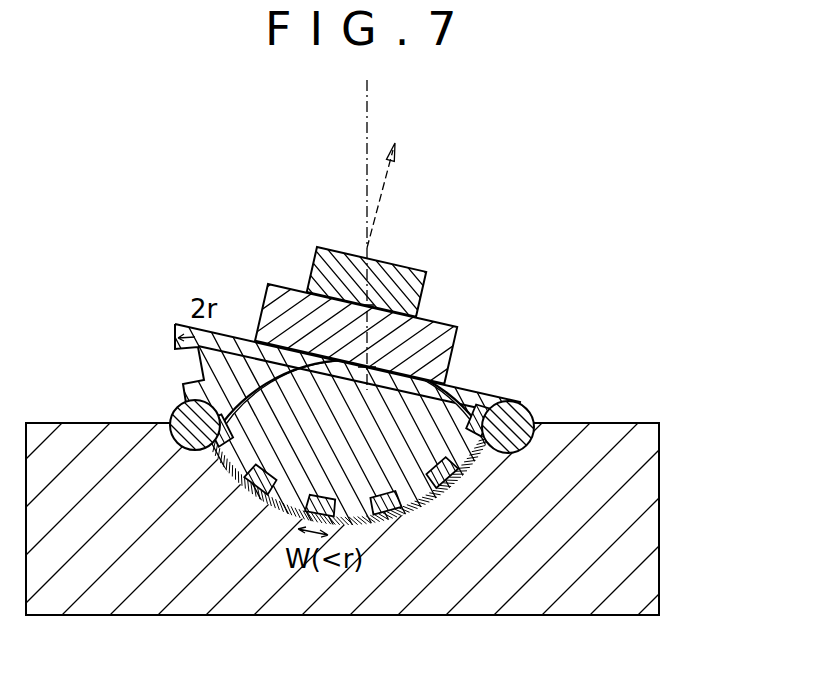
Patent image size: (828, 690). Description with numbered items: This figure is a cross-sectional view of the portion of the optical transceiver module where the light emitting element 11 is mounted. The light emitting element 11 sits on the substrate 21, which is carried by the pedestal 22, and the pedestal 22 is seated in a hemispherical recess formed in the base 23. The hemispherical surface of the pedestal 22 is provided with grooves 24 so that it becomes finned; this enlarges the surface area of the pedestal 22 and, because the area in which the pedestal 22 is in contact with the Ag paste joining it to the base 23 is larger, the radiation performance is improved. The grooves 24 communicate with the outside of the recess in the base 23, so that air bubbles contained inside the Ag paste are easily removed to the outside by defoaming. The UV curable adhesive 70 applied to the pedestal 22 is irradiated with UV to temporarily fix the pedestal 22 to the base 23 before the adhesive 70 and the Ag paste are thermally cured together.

The light emitting element 11 is at (420, 289).
The substrate 21 is at (441, 352).
The pedestal 22 is at (423, 487).
The base 23 is at (643, 536).
The grooves 24 is at (244, 483).
The UV curable adhesive 70 is at (180, 412).